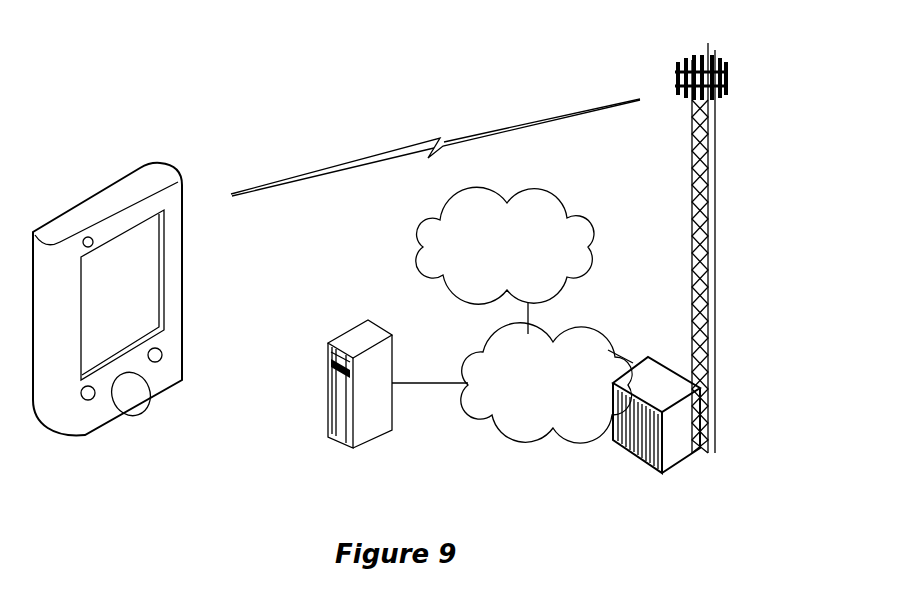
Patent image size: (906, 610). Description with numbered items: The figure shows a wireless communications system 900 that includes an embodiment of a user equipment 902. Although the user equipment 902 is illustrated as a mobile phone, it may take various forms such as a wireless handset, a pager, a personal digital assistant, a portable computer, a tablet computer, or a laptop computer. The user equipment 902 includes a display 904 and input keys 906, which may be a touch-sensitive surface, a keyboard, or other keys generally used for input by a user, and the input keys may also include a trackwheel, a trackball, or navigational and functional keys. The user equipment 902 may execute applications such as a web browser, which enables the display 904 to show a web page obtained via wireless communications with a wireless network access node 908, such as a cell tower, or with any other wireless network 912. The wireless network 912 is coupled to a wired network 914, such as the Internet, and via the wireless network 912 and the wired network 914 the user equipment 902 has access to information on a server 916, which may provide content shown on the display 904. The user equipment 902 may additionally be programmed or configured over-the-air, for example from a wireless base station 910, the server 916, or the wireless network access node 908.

The wireless communications system 900 is at (230, 122).
The user equipment 902 is at (107, 435).
The display 904 is at (185, 220).
The input keys 906 is at (184, 291).
The wireless network access node 908 is at (715, 450).
The wireless base station 910 is at (630, 458).
The wireless network 912 is at (546, 383).
The wired network 914 is at (505, 245).
The server 916 is at (362, 443).